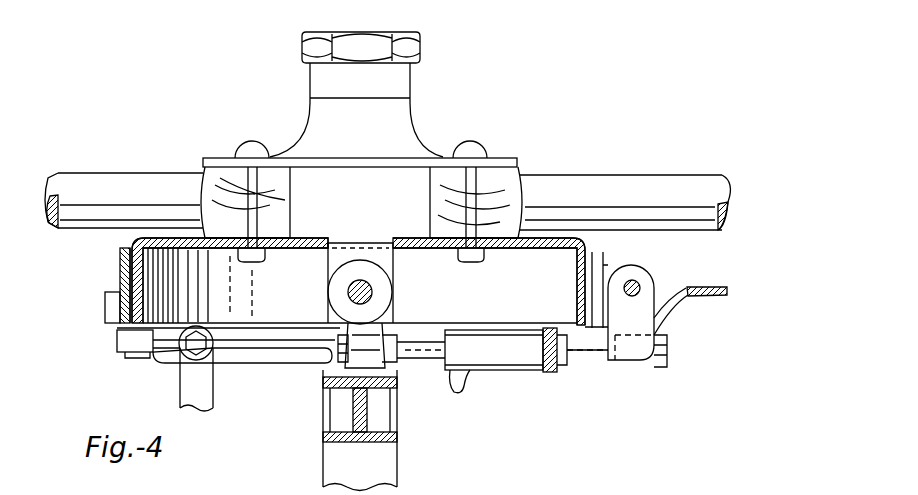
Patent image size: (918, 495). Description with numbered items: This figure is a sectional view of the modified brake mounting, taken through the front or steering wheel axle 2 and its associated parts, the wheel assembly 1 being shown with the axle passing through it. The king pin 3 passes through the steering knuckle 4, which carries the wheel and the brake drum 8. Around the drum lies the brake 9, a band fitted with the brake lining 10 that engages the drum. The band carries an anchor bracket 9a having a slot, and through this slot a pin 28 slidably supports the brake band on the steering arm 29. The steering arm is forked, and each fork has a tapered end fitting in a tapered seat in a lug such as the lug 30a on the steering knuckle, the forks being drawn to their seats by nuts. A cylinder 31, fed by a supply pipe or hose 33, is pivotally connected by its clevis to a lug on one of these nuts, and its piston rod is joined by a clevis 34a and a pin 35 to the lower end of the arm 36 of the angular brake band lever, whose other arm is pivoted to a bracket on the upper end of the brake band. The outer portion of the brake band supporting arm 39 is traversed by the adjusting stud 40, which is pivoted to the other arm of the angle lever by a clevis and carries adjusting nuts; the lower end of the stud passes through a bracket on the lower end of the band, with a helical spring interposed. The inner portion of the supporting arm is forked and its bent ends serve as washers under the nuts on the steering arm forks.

The handle bar 1 is at (493, 177).
The front or steering wheel axle 2 is at (385, 462).
The king pin 3 is at (372, 292).
The steering knuckle 4 is at (329, 283).
The brake drum 8 is at (577, 292).
The brake 9 is at (120, 265).
The anchor bracket 9a is at (108, 308).
The brake lining 10 is at (133, 285).
The pin 28 is at (135, 355).
The steering arm 29 is at (235, 355).
The lug 30a is at (345, 330).
The cylinder 31 is at (507, 363).
The supply pipe or hose 33 is at (462, 385).
The clevis 34a is at (640, 362).
The pin 35 is at (668, 362).
The arm of the angular brake band lever 36 is at (700, 286).
The outer portion of brake band supporting arm 39 is at (533, 365).
The adjusting stud 40 is at (640, 280).